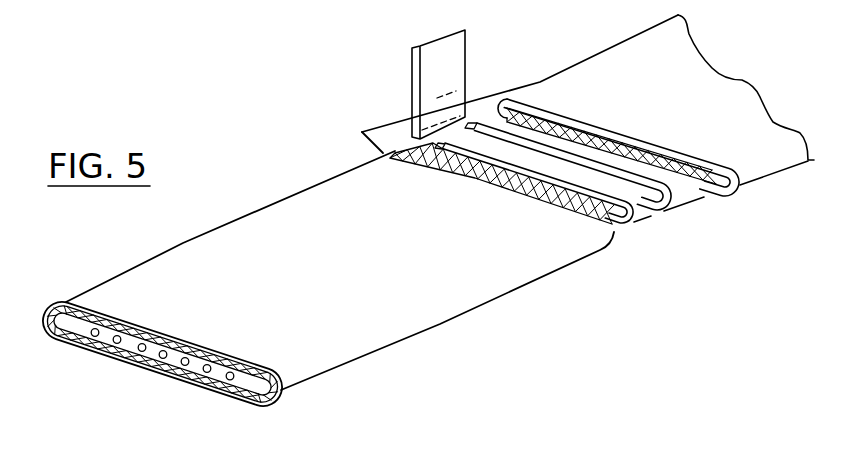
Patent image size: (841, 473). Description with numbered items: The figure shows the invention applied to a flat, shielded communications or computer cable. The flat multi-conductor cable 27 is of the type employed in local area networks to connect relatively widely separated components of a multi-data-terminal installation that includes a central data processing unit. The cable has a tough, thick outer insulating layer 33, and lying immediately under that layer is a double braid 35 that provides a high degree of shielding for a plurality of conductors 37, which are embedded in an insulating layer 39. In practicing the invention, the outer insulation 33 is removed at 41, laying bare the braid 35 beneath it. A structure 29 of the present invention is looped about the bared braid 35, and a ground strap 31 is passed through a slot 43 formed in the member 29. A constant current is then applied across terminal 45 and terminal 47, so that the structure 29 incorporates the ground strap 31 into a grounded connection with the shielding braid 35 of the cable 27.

The flat multi-conductor cable 27 is at (183, 242).
The structure 29 is at (668, 221).
The ground strap 31 is at (448, 40).
The outer insulating layer 33 is at (62, 303).
The double braid 35 is at (247, 393).
The conductors 37 is at (163, 358).
The insulating layer 39 is at (132, 342).
The region where insulation is removed 41 is at (731, 204).
The slot 43 is at (446, 139).
The terminal 45 is at (413, 153).
The terminal 47 is at (471, 125).